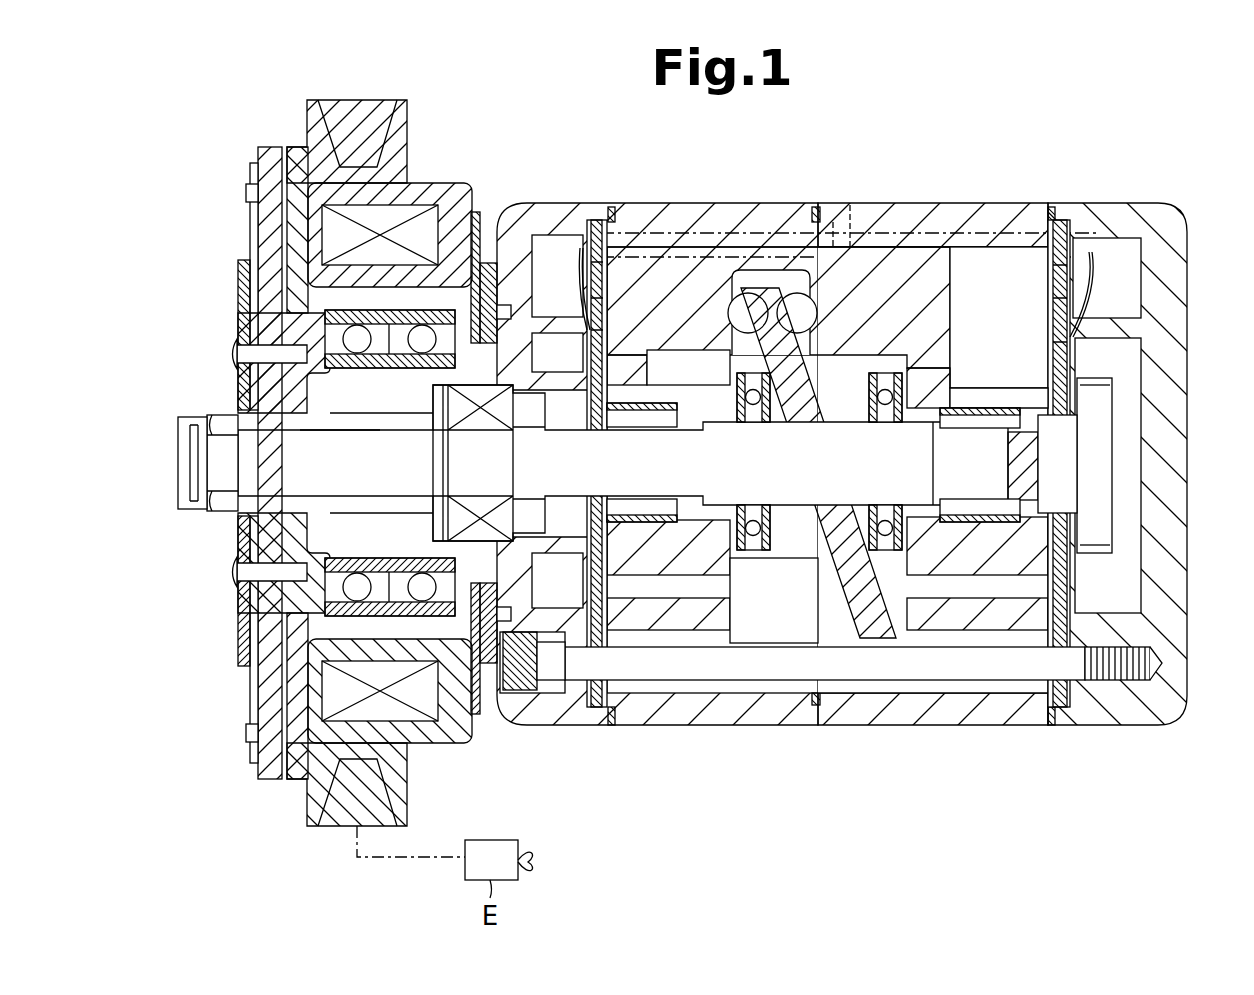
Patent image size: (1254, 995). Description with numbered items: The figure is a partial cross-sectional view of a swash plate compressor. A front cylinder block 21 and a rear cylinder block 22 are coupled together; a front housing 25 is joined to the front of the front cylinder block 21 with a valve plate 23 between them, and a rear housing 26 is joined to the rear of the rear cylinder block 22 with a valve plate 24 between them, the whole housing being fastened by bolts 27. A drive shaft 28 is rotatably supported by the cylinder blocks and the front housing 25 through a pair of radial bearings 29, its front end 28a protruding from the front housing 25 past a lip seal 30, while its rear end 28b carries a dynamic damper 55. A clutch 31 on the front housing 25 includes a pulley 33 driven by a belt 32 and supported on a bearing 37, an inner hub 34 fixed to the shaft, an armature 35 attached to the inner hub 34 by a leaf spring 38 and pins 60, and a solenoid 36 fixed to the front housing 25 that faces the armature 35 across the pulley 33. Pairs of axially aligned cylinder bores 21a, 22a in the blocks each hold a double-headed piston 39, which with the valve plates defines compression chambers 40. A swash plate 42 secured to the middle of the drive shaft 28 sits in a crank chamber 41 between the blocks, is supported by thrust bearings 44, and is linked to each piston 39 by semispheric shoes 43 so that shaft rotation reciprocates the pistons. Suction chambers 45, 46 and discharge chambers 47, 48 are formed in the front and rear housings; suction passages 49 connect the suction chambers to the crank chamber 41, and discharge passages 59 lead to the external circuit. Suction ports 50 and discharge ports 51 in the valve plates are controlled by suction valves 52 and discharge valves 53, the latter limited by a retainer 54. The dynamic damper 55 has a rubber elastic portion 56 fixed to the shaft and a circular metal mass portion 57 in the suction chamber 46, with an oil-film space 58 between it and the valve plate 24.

The front cylinder block 21 is at (742, 715).
The cylinder bore 21a is at (708, 247).
The rear cylinder block 22 is at (930, 718).
The cylinder bore 22a is at (933, 250).
The valve plate 23 is at (597, 715).
The valve plate 24 is at (1054, 715).
The front housing 25 is at (547, 720).
The rear housing 26 is at (1122, 715).
The bolt 27 is at (518, 695).
The drive shaft 28 is at (402, 432).
The front end of drive shaft 28a is at (378, 497).
The rear end of drive shaft 28b is at (968, 400).
The radial bearing 29 is at (650, 510).
The lip seal 30 is at (470, 425).
The clutch 31 is at (440, 162).
The belt 32 is at (346, 103).
The pulley 33 is at (307, 128).
The inner hub 34 is at (243, 387).
The armature 35 is at (258, 150).
The solenoid 36 is at (455, 190).
The bearing 37 is at (358, 352).
The leaf spring 38 is at (240, 294).
The double-headed piston 39 is at (875, 262).
The compression chamber 40 is at (961, 304).
The crank chamber 41 is at (756, 634).
The swash plate 42 is at (845, 590).
The semispheric shoe 43 is at (728, 312).
The thrust bearing 44 is at (752, 405).
The suction chamber 45 is at (536, 367).
The suction chamber 46 is at (1094, 596).
The discharge chamber 47 is at (536, 306).
The discharge chamber 48 is at (1094, 306).
The suction passage 49 is at (698, 585).
The suction port 50 is at (612, 330).
The discharge port 51 is at (615, 300).
The suction valve 52 is at (628, 368).
The discharge valve 53 is at (620, 270).
The retainer 54 is at (571, 250).
The dynamic damper 55 is at (1105, 503).
The rubber elastic portion 56 is at (1012, 460).
The circular metal mass portion 57 is at (1105, 415).
The space 58 is at (1083, 395).
The discharge passage 59 is at (812, 210).
The pin 60 is at (232, 352).